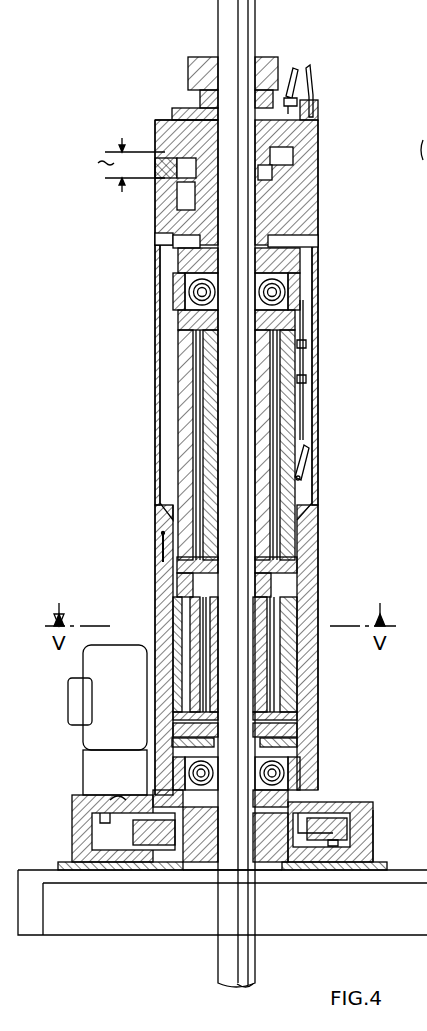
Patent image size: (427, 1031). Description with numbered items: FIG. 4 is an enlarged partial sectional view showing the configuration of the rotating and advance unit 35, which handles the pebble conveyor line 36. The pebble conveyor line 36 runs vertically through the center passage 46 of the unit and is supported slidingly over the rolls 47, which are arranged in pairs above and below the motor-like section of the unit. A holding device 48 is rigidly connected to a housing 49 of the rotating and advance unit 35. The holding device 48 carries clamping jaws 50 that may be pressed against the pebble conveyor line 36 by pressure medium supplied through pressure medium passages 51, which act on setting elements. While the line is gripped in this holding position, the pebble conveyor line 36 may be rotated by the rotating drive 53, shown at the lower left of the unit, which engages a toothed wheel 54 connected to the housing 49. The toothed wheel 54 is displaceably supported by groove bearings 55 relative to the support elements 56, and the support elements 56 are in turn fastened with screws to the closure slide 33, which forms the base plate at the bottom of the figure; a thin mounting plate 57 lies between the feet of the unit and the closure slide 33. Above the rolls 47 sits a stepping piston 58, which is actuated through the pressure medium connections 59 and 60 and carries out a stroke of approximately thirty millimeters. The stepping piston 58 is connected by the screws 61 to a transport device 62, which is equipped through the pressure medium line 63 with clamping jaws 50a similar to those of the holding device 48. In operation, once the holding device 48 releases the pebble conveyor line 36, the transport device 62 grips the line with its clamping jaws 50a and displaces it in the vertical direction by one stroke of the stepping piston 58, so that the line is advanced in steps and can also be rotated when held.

The closure slide 33 is at (34, 942).
The rotating and advance unit 35 is at (332, 508).
The pebble conveyor line 36 is at (256, 920).
The center passage 46 is at (213, 893).
The rolls 47 is at (295, 298).
The holding device 48 is at (292, 672).
The housing 49 is at (302, 720).
The clamping jaws 50 is at (218, 622).
The clamping jaws 50a is at (210, 404).
The pressure medium passages 51 is at (160, 530).
The rotating drive 53 is at (88, 770).
The toothed wheel 54 is at (165, 862).
The groove bearings 55 is at (335, 810).
The support elements 56 is at (383, 822).
The mounting plate 57 is at (355, 878).
The stepping piston 58 is at (170, 218).
The pressure medium connection 59 is at (291, 68).
The pressure medium connection 60 is at (309, 72).
The screws 61 is at (198, 103).
The transport device 62 is at (180, 358).
The pressure medium line 63 is at (300, 483).